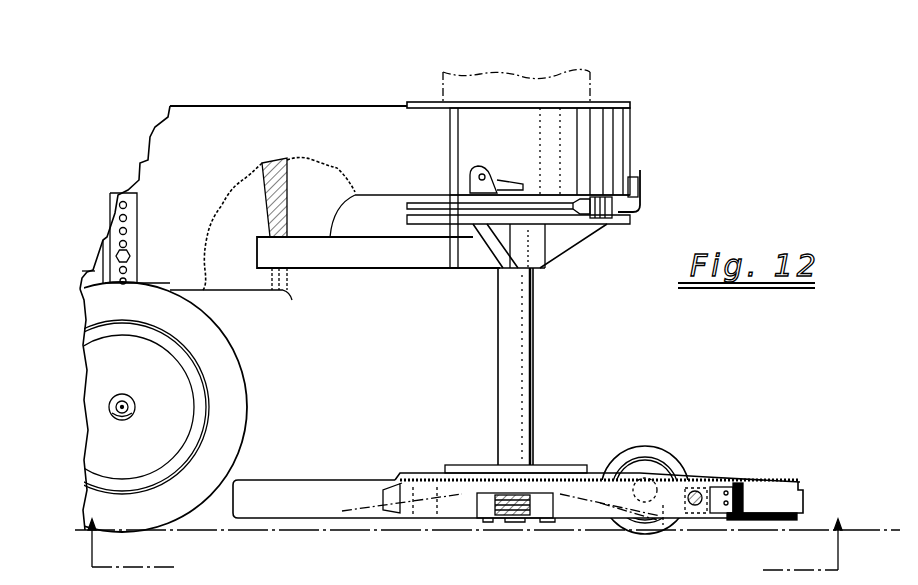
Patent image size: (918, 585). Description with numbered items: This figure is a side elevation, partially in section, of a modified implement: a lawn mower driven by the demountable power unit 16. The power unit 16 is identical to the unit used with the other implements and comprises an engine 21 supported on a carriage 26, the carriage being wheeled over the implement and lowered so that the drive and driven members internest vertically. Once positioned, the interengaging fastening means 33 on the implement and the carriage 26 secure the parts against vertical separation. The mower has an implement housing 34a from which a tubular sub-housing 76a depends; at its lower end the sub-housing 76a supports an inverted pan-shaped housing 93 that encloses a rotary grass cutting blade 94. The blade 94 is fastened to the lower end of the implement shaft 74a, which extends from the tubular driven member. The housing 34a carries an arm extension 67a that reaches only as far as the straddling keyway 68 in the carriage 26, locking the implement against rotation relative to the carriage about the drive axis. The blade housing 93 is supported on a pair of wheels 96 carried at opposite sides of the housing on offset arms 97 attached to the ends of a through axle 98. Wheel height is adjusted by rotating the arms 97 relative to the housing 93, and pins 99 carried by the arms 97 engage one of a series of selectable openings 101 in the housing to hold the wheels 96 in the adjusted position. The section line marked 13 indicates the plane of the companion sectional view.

The demountable power unit 16 is at (266, 98).
The carriage 26 is at (342, 97).
The engine 21 is at (600, 85).
The interengaging fastening means 33 is at (648, 182).
The implement housing 34a is at (582, 250).
The arm extension 67a is at (390, 258).
The straddling keyway 68 is at (285, 291).
The tubular sub-housing 76a is at (523, 335).
The inverted pan-shaped housing 93 is at (321, 482).
The rotary grass cutting blade 94 is at (430, 503).
The implement shaft 74a is at (515, 513).
The wheels 96 is at (668, 457).
The offset arms 97 is at (663, 525).
The through axle 98 is at (697, 489).
The pins 99 is at (722, 502).
The selectable openings 101 is at (742, 500).
The section line 13 is at (470, 534).